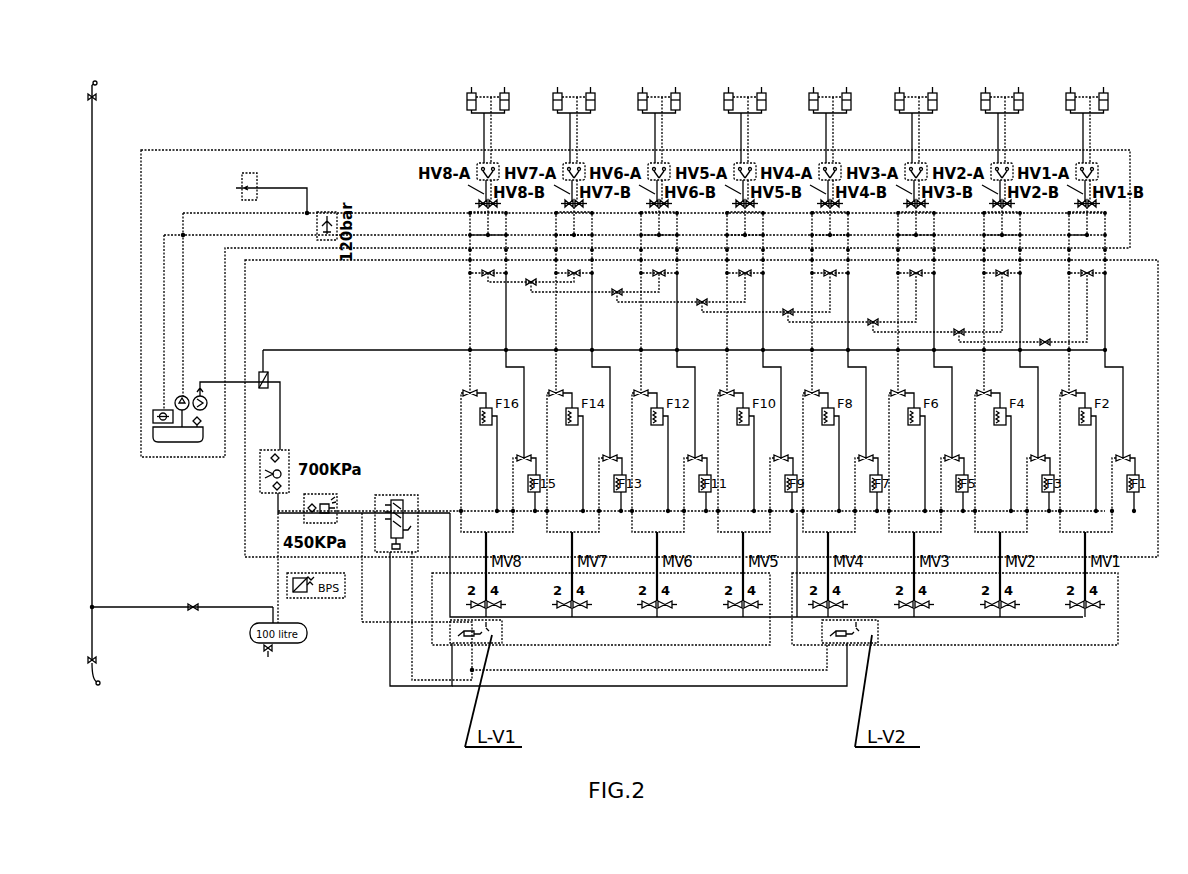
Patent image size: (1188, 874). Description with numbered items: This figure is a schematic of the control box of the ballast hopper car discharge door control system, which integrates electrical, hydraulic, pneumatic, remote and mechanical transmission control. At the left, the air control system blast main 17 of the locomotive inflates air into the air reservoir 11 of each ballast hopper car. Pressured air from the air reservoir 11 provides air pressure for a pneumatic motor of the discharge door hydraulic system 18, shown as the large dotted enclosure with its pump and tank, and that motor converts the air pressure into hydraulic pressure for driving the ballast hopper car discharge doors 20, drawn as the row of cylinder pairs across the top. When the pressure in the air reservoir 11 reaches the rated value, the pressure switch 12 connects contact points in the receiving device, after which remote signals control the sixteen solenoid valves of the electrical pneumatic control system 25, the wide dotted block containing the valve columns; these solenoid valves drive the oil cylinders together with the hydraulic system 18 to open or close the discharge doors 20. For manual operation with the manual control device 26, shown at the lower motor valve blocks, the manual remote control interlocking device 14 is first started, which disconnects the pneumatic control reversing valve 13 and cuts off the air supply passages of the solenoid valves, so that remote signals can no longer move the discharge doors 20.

The air reservoir 11 is at (263, 643).
The pressure switch 12 is at (323, 600).
The pneumatic control reversing valve 13 is at (385, 553).
The manual remote control interlocking device 14 is at (448, 633).
The air control system blast main 17 is at (91, 590).
The hydraulic system 18 is at (310, 149).
The discharge door 20 is at (653, 91).
The electrical pneumatic control system 25 is at (245, 500).
The manual control device 26 is at (573, 647).